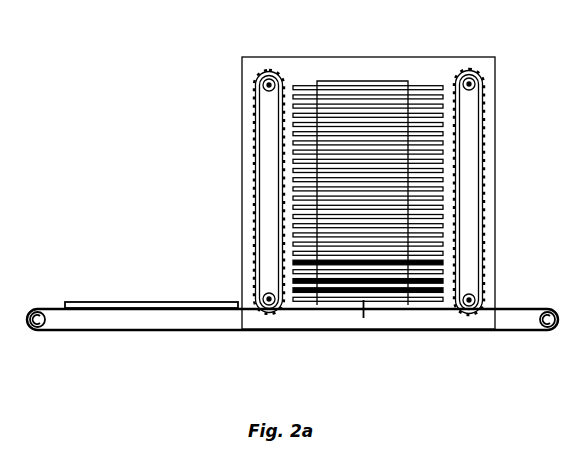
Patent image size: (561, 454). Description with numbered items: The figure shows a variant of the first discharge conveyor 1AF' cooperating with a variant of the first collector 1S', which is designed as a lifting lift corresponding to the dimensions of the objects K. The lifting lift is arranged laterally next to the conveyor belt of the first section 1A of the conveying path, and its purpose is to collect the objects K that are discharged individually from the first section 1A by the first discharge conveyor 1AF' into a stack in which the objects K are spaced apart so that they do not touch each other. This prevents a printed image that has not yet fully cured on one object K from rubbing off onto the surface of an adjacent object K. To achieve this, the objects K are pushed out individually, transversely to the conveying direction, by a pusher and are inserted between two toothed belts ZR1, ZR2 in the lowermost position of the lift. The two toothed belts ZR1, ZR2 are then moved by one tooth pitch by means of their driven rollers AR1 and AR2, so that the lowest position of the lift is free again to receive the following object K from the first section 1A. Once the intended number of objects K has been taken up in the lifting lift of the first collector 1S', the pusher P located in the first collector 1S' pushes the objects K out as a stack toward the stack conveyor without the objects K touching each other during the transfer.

The first discharge conveyor 1AF' is at (357, 36).
The first collector 1S' is at (368, 182).
The pusher P is at (365, 80).
The driven roller AR1 is at (478, 79).
The driven roller AR2 is at (258, 83).
The toothed belt ZR1 is at (483, 111).
The toothed belt ZR2 is at (254, 131).
The objects K is at (285, 290).
The first section of the conveying path 1A is at (292, 319).